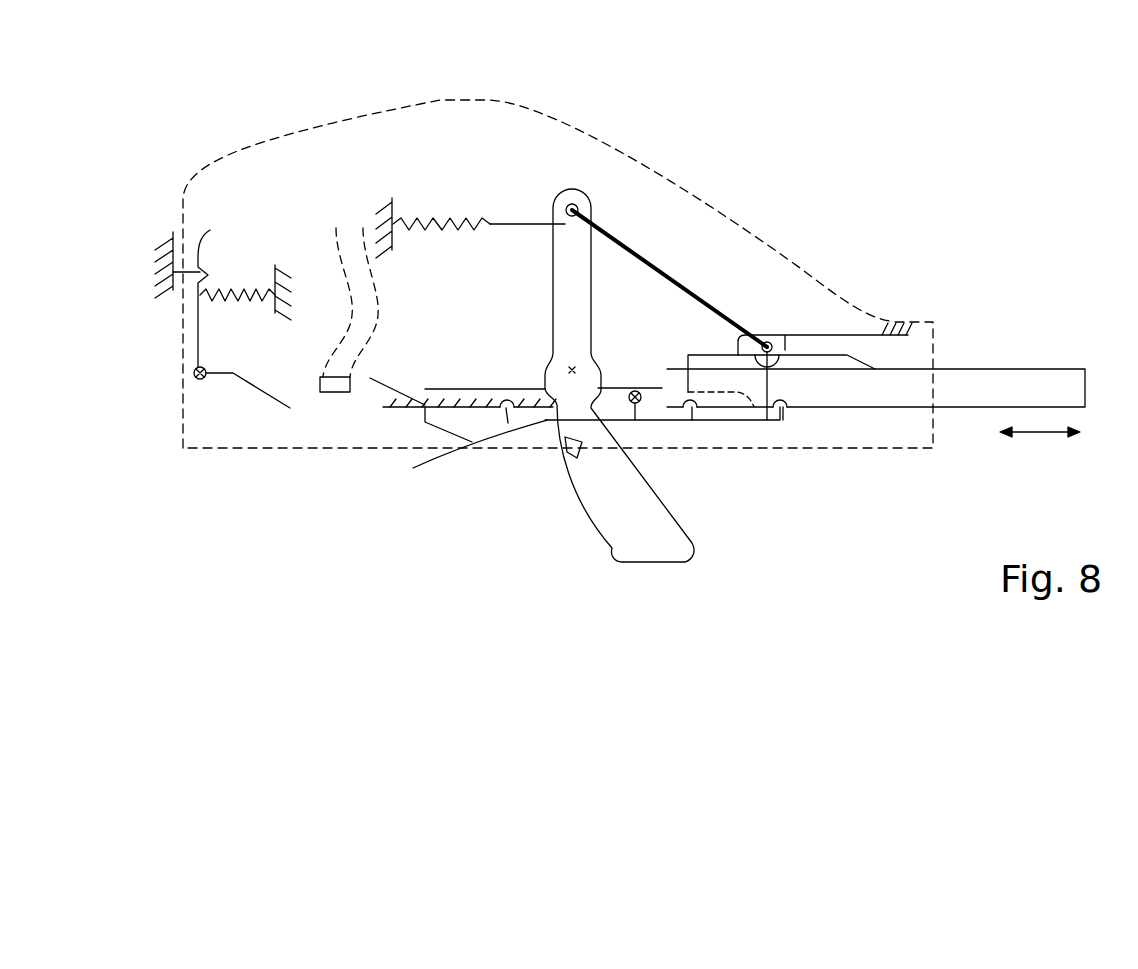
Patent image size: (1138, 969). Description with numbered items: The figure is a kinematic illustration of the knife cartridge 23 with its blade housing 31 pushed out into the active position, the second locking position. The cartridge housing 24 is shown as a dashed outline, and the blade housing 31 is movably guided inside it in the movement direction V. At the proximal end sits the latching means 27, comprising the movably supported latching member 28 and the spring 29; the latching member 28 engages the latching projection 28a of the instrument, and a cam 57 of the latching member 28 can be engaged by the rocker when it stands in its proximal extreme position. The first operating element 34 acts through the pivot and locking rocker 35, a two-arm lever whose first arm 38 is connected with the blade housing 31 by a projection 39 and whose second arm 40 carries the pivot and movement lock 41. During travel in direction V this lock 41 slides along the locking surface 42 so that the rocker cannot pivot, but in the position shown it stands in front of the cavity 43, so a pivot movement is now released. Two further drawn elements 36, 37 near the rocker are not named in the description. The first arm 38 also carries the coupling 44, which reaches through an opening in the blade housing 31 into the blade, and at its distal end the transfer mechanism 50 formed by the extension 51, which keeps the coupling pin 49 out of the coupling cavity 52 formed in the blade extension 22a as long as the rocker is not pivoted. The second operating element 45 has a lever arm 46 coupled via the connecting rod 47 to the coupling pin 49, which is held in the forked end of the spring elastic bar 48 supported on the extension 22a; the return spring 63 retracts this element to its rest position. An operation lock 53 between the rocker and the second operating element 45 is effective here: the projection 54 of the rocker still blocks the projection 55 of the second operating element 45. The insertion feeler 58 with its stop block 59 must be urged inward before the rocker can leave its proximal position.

The extension 22a is at (837, 365).
The knife cartridge 23 is at (688, 152).
The cartridge housing 24 is at (443, 100).
The latching means 27 is at (266, 257).
The latching member 28 is at (204, 248).
The latching projection 28a is at (190, 275).
The spring 29 is at (232, 271).
The blade housing 31 is at (992, 380).
The first operating element 34 is at (455, 462).
The pivot and locking rocker 35 is at (527, 423).
The pivot pin 36 is at (637, 391).
The link 37 is at (612, 402).
The first arm 38 is at (661, 423).
The projection 39 is at (693, 421).
The second arm 40 is at (492, 437).
The pivot and movement lock 41 is at (507, 412).
The locking surface 42 is at (455, 412).
The cavity 43 is at (507, 401).
The coupling 44 is at (782, 412).
The second operating element 45 is at (652, 547).
The lever arm 46 is at (568, 268).
The connecting rod 47 is at (653, 257).
The bar 48 is at (806, 336).
The coupling pin 49 is at (767, 342).
The transfer mechanism 50 is at (773, 383).
The extension 51 is at (760, 396).
The coupling cavity 52 is at (728, 363).
The operation lock 53 is at (562, 434).
The projection 54 is at (571, 462).
The projection 55 is at (585, 447).
The cam 57 is at (255, 383).
The insertion feeler 58 is at (383, 332).
The stop block 59 is at (338, 392).
The return spring 63 is at (455, 205).
The movement direction V is at (1045, 436).